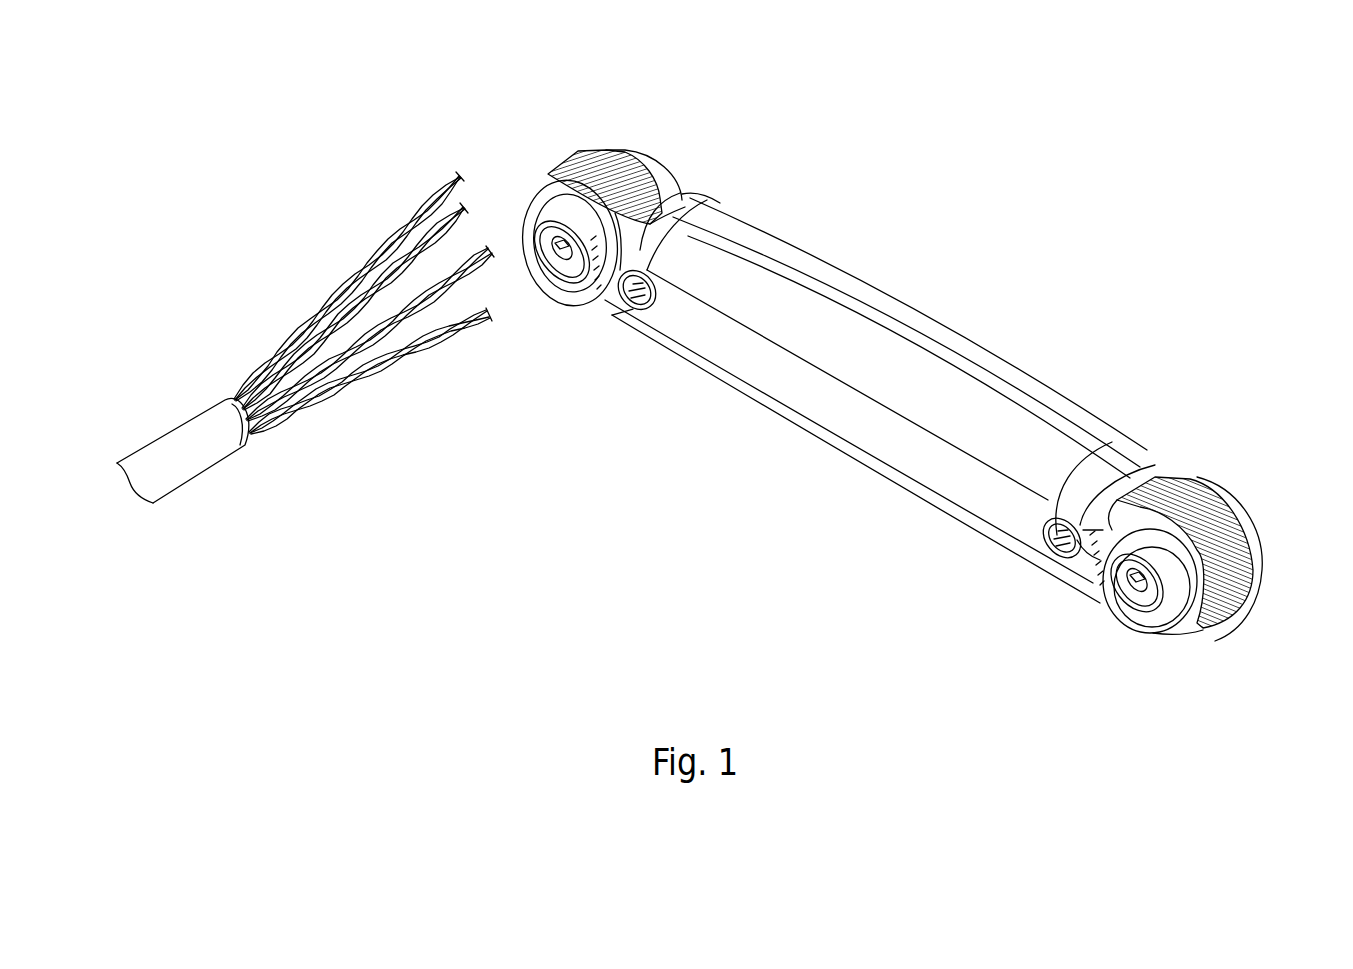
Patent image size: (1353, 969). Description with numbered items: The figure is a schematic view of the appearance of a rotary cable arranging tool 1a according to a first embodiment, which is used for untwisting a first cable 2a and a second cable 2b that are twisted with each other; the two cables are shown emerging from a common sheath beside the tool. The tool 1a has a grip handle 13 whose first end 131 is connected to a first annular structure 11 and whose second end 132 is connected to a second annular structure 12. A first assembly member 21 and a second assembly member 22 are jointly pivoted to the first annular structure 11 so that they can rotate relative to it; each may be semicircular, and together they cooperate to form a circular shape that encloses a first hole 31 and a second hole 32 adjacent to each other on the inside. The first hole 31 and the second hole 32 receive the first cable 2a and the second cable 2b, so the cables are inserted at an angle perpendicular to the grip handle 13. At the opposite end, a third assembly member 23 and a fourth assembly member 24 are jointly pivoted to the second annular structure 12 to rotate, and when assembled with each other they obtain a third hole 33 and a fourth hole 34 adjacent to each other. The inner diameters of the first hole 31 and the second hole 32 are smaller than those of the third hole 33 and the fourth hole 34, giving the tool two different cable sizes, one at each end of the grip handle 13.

The rotary cable arranging tool 1a is at (928, 137).
The first annular structure 11 is at (623, 150).
The second annular structure 12 is at (1197, 477).
The grip handle 13 is at (846, 428).
The first end 131 is at (663, 147).
The second end 132 is at (1260, 488).
The first assembly member 21 is at (545, 178).
The second assembly member 22 is at (575, 300).
The third assembly member 23 is at (1148, 478).
The fourth assembly member 24 is at (1195, 634).
The first hole 31 is at (556, 243).
The second hole 32 is at (564, 262).
The third hole 33 is at (1126, 600).
The fourth hole 34 is at (1152, 598).
The first cable 2a is at (383, 370).
The second cable 2b is at (385, 372).